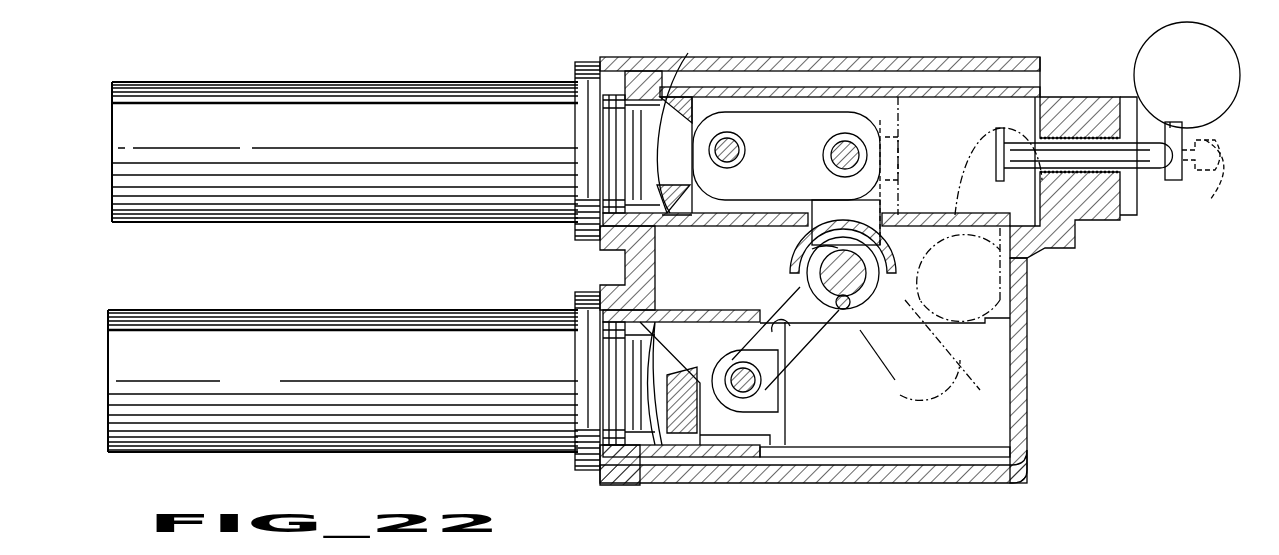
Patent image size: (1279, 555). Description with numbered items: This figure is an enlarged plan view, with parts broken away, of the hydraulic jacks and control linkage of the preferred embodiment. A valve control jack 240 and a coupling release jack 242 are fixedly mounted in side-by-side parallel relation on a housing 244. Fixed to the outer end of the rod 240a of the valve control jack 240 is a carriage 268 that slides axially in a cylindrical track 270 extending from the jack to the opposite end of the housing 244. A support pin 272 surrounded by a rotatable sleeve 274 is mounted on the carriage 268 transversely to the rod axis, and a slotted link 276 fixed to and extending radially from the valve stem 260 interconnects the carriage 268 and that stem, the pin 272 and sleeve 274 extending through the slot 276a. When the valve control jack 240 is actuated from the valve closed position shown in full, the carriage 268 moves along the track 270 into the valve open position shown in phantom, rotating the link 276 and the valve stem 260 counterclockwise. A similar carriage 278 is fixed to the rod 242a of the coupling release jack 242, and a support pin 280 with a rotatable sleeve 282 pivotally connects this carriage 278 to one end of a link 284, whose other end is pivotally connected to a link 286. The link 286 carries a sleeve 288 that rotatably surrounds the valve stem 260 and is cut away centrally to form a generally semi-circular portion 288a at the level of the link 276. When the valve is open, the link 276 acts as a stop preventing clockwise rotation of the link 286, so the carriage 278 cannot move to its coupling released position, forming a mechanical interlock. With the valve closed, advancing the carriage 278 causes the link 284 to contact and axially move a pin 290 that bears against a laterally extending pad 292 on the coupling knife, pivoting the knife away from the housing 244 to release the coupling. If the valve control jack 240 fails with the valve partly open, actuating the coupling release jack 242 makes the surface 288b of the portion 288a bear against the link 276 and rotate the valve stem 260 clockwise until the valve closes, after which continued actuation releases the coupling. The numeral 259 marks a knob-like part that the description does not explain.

The valve control jack 240 is at (244, 369).
The rod 240a is at (612, 378).
The coupling release jack 242 is at (228, 141).
The rod 242a is at (615, 150).
The housing 244 is at (1030, 446).
The knob 259 is at (1213, 89).
The valve stem 260 is at (868, 272).
The carriage 268 is at (643, 343).
The cylindrical track 270 is at (730, 457).
The support pin 272 is at (738, 372).
The rotatable sleeve 274 is at (788, 390).
The slotted link 276 is at (930, 420).
The slot 276a is at (796, 302).
The carriage 278 is at (679, 122).
The support pin 280 is at (738, 148).
The rotatable sleeve 282 is at (752, 166).
The link 284 is at (812, 126).
The link 286 is at (868, 221).
The sleeve 288 is at (876, 246).
The semi-circular portion 288a is at (810, 250).
The surface 288b is at (864, 322).
The pin 290 is at (1140, 193).
The pad 292 is at (1185, 134).